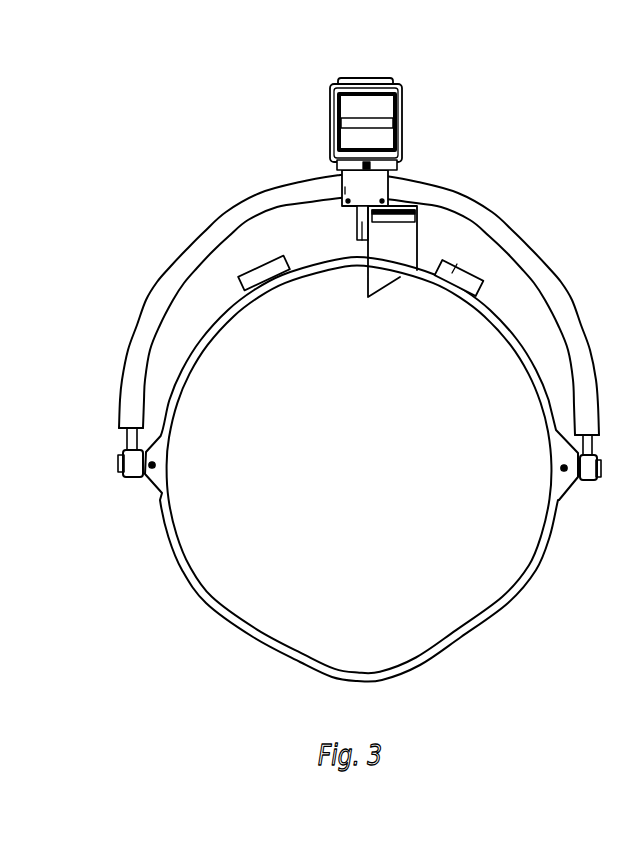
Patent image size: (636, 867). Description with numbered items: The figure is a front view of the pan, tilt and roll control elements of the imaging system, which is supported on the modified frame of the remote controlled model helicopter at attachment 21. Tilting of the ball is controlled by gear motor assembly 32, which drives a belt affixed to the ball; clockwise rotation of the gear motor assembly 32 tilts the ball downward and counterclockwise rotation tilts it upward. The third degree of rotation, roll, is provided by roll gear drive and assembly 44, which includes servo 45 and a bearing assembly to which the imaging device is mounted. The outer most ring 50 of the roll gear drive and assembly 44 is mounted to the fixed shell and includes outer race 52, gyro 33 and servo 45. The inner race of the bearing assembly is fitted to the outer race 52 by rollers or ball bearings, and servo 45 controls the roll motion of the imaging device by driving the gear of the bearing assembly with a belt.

The attachment 21 is at (432, 128).
The gear motor assembly 32 is at (408, 244).
The gyro 33 is at (263, 266).
The roll gear drive and assembly 44 is at (359, 365).
The servo 45 is at (473, 277).
The outer most ring 50 is at (473, 628).
The outer race 52 is at (436, 630).